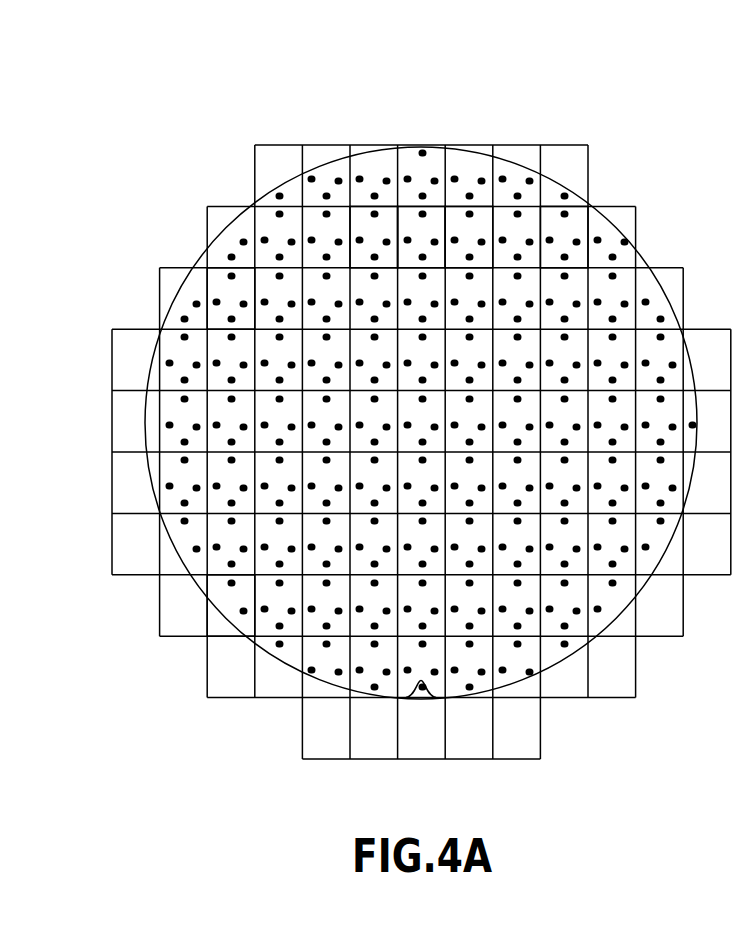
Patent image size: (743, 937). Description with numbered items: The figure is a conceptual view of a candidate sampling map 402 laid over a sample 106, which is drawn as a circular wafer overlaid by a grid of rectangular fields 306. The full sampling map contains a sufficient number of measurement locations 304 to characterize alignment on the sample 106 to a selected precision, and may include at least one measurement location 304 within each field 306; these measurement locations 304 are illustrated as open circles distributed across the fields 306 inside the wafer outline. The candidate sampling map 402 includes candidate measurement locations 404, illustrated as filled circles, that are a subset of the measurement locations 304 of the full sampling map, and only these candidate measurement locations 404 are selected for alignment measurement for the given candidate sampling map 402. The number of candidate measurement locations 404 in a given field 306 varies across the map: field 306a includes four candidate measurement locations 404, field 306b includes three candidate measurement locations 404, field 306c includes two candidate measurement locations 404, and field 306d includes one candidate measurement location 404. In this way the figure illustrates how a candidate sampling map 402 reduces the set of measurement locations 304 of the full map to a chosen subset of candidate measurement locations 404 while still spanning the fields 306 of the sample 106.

The candidate sampling map 402 is at (178, 165).
The sample 106 is at (288, 180).
The field 306 is at (222, 288).
The field 306a is at (365, 220).
The field 306b is at (578, 220).
The field 306c is at (480, 222).
The field 306d is at (408, 220).
The measurement location 304 is at (228, 585).
The candidate measurement location 404 is at (375, 688).